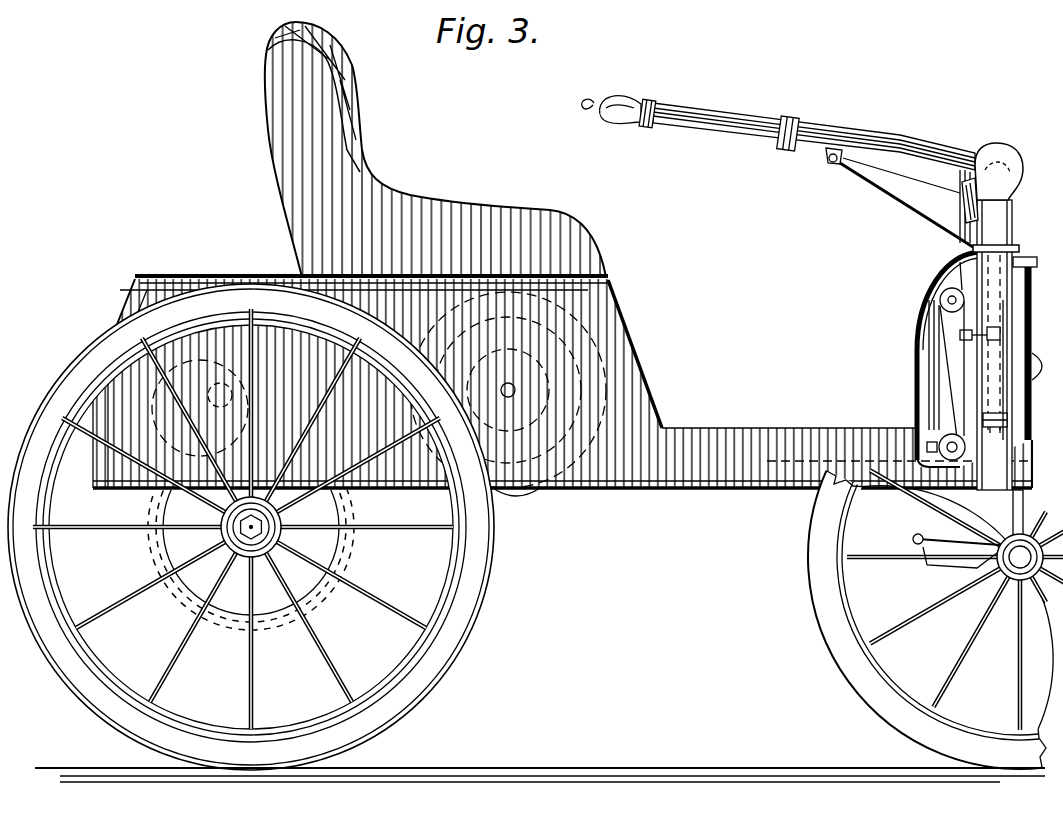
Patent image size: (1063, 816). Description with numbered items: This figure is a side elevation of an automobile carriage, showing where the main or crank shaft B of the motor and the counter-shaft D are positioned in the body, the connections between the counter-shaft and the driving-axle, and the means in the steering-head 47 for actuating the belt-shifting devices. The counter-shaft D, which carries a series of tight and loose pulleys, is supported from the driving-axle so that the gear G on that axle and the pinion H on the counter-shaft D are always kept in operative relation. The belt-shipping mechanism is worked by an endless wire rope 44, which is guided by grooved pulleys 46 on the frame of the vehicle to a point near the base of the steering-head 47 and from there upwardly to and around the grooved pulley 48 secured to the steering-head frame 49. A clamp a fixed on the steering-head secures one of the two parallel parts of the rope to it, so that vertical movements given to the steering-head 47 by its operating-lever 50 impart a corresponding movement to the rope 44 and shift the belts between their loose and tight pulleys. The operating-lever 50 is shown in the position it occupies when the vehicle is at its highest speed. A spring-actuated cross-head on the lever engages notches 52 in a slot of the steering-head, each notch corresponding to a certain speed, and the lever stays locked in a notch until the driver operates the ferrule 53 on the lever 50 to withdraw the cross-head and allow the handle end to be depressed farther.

The ferrule 53 is at (648, 103).
The operating-lever 50 is at (742, 118).
The notches 52 is at (964, 212).
The steering-head frame 49 is at (957, 262).
The grooved pulley 48 is at (940, 303).
The steering-head 47 is at (1008, 413).
The grooved pulleys 46 is at (945, 433).
The endless wire rope 44 is at (937, 365).
The pinion H is at (147, 337).
The counter-shaft D is at (108, 485).
The main or crank shaft B is at (563, 482).
The gear G is at (173, 598).
The clamp a is at (1040, 350).